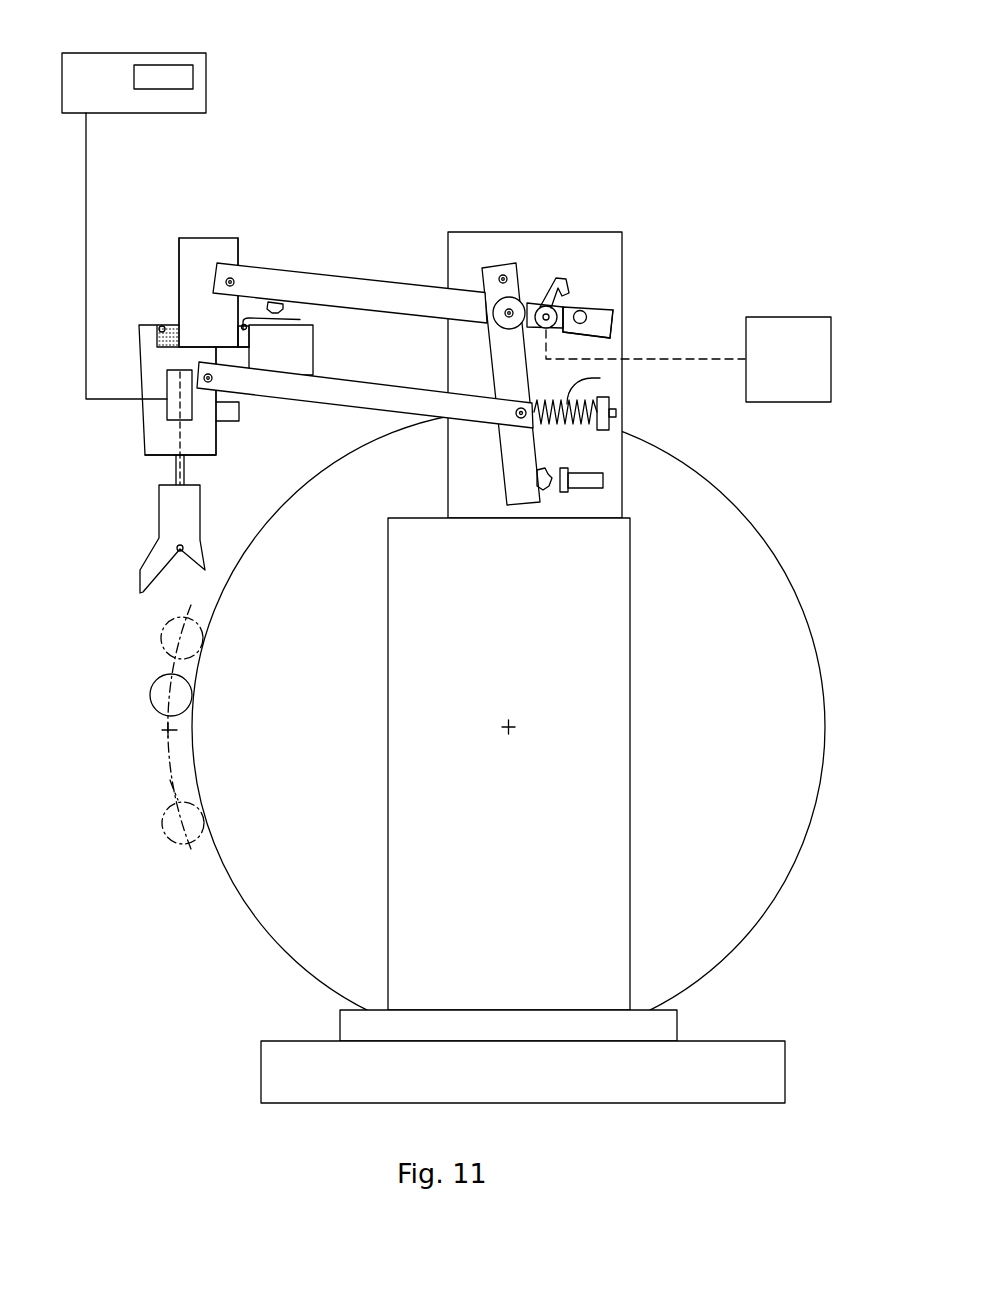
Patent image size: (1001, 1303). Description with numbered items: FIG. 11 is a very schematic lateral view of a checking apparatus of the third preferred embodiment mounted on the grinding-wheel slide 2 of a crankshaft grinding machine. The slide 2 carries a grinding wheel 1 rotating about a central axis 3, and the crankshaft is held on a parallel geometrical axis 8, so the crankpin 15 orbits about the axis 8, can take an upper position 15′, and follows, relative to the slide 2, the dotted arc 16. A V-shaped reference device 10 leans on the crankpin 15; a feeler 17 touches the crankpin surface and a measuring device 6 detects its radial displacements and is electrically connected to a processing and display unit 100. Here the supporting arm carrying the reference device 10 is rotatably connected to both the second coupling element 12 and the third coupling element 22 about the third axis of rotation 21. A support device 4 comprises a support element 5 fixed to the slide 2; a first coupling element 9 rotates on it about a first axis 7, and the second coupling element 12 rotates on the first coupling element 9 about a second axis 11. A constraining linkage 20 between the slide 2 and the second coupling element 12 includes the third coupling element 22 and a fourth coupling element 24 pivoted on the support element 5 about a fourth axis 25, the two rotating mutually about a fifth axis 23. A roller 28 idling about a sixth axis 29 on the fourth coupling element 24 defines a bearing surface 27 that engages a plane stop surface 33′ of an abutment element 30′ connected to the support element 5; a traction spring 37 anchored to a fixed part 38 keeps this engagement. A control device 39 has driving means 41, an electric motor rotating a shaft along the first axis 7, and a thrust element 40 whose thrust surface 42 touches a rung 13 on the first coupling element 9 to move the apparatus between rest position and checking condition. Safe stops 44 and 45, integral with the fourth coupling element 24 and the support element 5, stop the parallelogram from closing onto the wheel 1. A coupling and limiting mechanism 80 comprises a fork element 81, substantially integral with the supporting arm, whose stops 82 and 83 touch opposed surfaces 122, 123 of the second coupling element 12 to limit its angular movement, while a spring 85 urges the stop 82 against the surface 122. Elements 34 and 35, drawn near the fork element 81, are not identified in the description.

The grinding wheel 1 is at (700, 948).
The grinding-wheel slide 2 is at (435, 913).
The central axis of rotation 3 is at (512, 731).
The support device 4 is at (354, 206).
The support element 5 is at (600, 248).
The measuring device 6 is at (177, 407).
The first axis of rotation 7 is at (548, 303).
The geometrical axis of rotation 8 is at (166, 731).
The first coupling element 9 is at (395, 300).
The reference device 10 is at (166, 497).
The second axis of rotation 11 is at (240, 284).
The second coupling element 12 is at (208, 248).
The rung 13 is at (586, 316).
The crankpin 15 is at (148, 697).
The upper position of the crankpin 15′ is at (162, 640).
The arc 16 is at (172, 788).
The feeler 17 is at (181, 552).
The constraining linkage 20 is at (436, 381).
The third axis of rotation 21 is at (208, 392).
The third coupling element 22 is at (330, 390).
The fifth axis of rotation 23 is at (528, 424).
The fourth coupling element 24 is at (515, 294).
The fourth axis of rotation 25 is at (502, 276).
The bearing surface 27 is at (509, 297).
The roller 28 is at (546, 304).
The sixth axis of rotation 29 is at (505, 310).
The abutment element 30′ is at (568, 340).
The stop surface 33′ is at (607, 336).
The stop 34 is at (280, 302).
The holder 35 is at (288, 328).
The traction spring 37 is at (600, 378).
The fixed part 38 is at (616, 412).
The control device 39 is at (677, 165).
The thrust element 40 is at (579, 293).
The driving means 41 is at (796, 332).
The thrust surface 42 is at (574, 328).
The safe stop 44 is at (543, 486).
The safe stop 45 is at (565, 492).
The coupling and limiting mechanism 80 is at (252, 414).
The fork element 81 is at (130, 342).
The stop 82 is at (300, 320).
The stop 83 is at (160, 327).
The spring 85 is at (173, 328).
The processing and display unit 100 is at (110, 63).
The surface of the second coupling element 122 is at (243, 251).
The surface of the second coupling element 123 is at (173, 251).